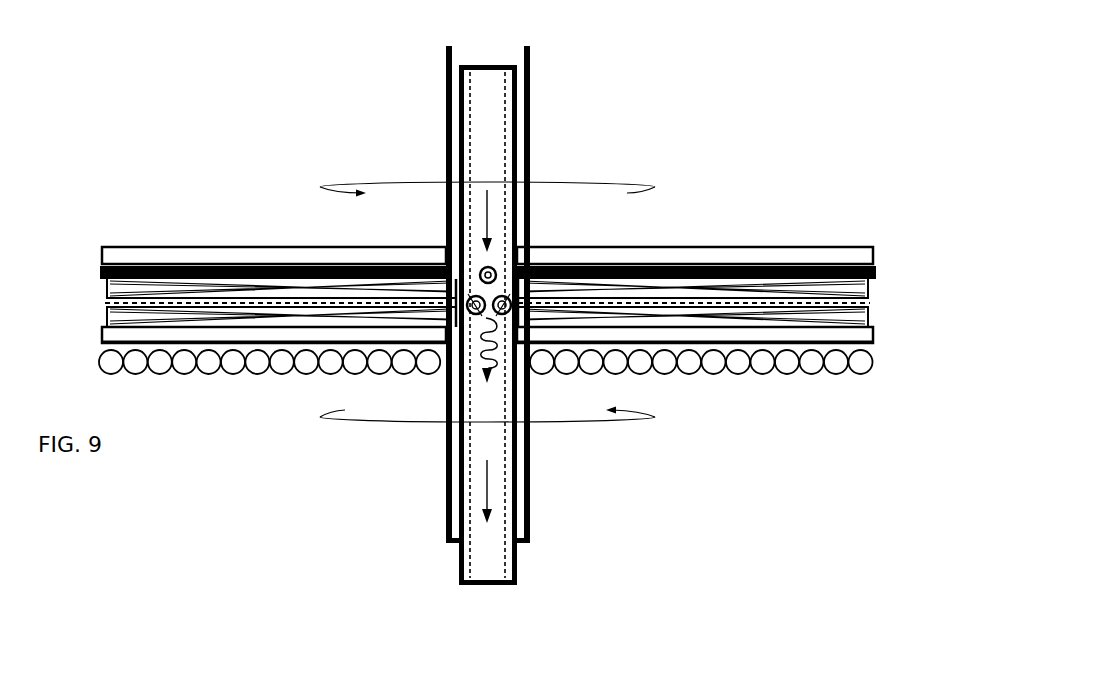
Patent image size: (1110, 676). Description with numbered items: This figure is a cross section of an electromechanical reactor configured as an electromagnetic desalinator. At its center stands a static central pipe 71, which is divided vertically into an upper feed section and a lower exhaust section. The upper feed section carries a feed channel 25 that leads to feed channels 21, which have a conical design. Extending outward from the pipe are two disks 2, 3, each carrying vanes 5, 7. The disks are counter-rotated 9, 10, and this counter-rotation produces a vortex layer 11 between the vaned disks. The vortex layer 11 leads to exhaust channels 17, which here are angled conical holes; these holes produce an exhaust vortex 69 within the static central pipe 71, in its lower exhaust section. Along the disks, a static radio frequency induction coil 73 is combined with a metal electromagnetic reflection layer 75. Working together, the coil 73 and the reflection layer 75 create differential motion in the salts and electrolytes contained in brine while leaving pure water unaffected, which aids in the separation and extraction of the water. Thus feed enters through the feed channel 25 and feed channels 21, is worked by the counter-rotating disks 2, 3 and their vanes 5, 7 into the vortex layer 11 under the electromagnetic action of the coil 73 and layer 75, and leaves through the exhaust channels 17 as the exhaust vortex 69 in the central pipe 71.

The disk 2 is at (735, 254).
The disk 3 is at (697, 338).
The vanes 5 is at (275, 326).
The vanes 7 is at (273, 284).
The counter-rotation 9 is at (396, 174).
The counter-rotation 10 is at (566, 428).
The vortex layer 11 is at (195, 302).
The exhaust channels 17 is at (513, 297).
The feed channels 21 is at (477, 270).
The feed channel 25 is at (497, 135).
The exhaust vortex 69 is at (482, 350).
The static central pipe 71 is at (462, 566).
The static radio frequency induction coil 73 is at (617, 268).
The metal electromagnetic reflection layer 75 is at (787, 368).